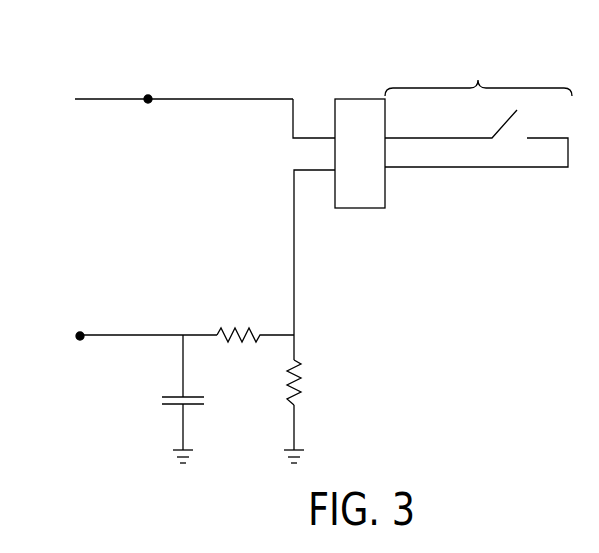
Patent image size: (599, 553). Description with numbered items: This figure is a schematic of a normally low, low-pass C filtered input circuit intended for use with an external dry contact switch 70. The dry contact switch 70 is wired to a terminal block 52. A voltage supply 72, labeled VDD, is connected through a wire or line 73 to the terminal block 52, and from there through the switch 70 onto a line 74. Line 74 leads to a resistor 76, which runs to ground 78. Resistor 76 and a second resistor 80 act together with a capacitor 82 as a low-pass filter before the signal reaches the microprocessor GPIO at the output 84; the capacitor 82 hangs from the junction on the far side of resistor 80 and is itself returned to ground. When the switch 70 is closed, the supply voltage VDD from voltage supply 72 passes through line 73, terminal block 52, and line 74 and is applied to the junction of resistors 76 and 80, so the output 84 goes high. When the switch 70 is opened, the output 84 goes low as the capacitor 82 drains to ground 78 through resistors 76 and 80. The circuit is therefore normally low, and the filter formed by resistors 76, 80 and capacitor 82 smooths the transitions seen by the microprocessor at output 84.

The voltage supply 72 is at (107, 72).
The wire or line 73 is at (265, 98).
The terminal block 52 is at (358, 98).
The dry contact switch 70 is at (500, 122).
The line 74 is at (292, 237).
The output 84 is at (126, 335).
The resistor 80 is at (232, 330).
The capacitor 82 is at (197, 398).
The resistor 76 is at (298, 375).
The ground 78 is at (296, 428).